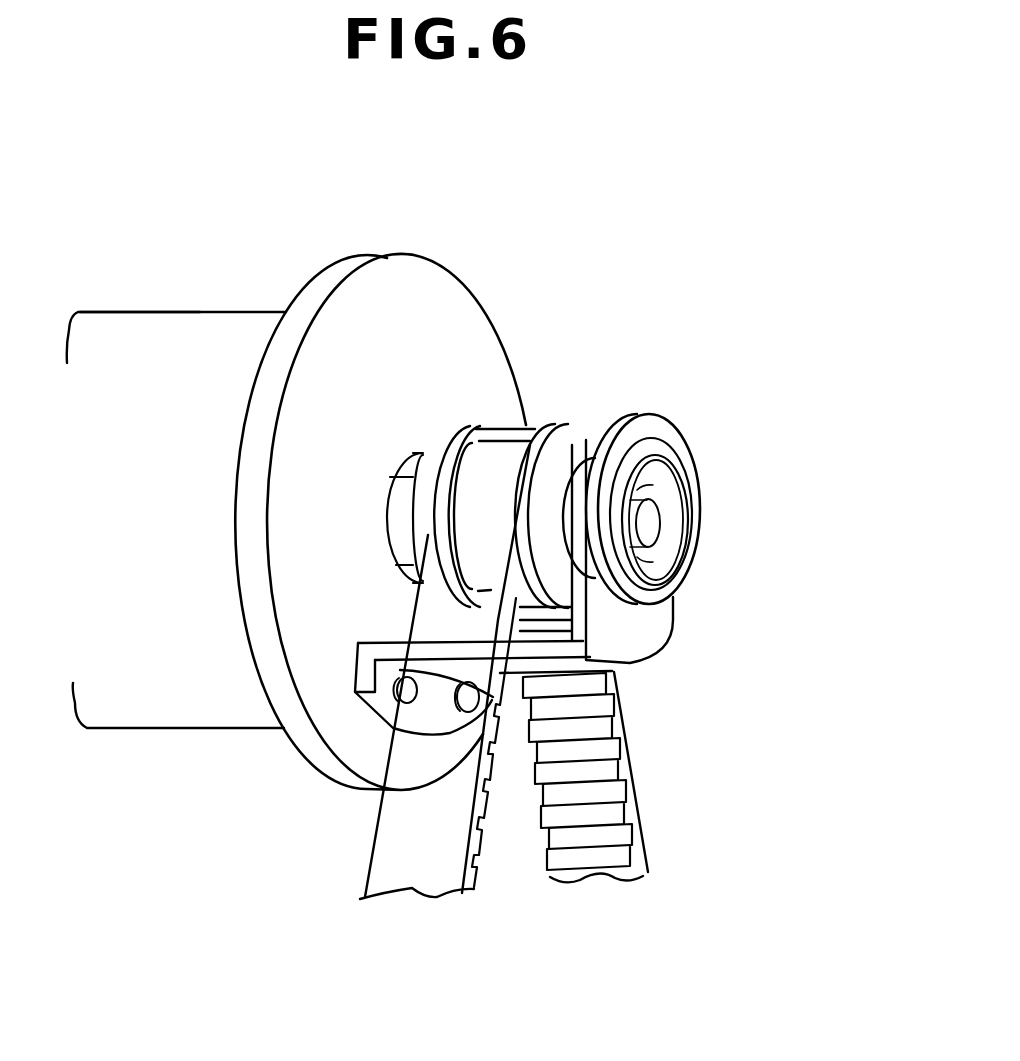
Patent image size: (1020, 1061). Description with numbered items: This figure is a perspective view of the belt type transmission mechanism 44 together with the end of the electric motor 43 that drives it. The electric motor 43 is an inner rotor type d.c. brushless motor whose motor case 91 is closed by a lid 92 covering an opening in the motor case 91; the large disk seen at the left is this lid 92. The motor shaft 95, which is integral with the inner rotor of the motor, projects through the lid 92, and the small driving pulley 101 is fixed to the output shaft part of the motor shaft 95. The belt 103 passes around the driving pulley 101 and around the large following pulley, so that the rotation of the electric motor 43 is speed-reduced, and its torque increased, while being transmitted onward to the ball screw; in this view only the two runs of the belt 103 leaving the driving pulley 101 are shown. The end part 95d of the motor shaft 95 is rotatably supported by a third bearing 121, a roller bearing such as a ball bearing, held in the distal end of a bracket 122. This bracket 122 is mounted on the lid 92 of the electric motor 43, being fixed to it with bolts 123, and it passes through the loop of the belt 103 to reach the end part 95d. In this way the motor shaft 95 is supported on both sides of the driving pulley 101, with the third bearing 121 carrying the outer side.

The electric motor 43 is at (112, 297).
The motor case 91 is at (163, 330).
The lid 92 is at (413, 278).
The belt type transmission mechanism 44 is at (558, 394).
The driving pulley 101 is at (583, 435).
The motor shaft 95 is at (660, 505).
The end part 95d is at (653, 522).
The third bearing 121 is at (660, 563).
The bracket 122 is at (643, 648).
The bolts 123 is at (458, 710).
The belt 103 is at (650, 835).